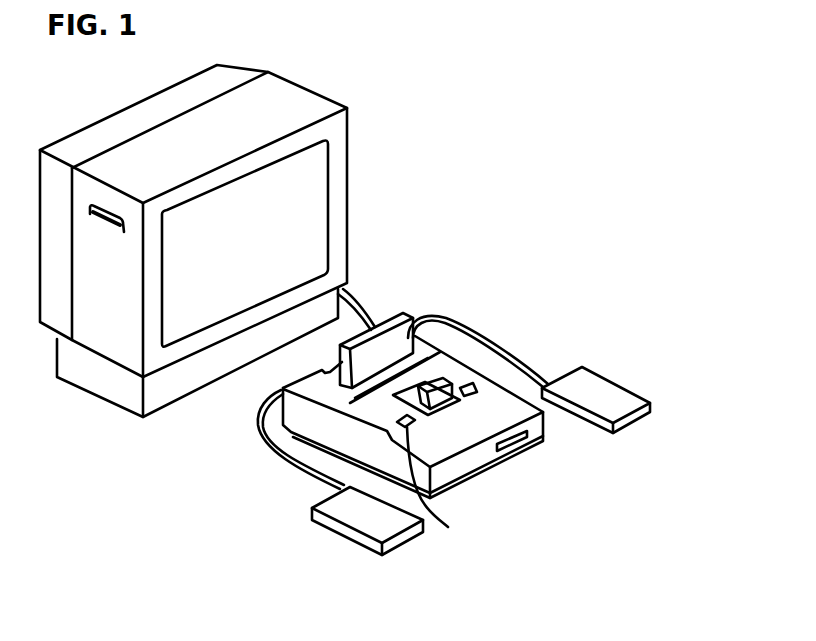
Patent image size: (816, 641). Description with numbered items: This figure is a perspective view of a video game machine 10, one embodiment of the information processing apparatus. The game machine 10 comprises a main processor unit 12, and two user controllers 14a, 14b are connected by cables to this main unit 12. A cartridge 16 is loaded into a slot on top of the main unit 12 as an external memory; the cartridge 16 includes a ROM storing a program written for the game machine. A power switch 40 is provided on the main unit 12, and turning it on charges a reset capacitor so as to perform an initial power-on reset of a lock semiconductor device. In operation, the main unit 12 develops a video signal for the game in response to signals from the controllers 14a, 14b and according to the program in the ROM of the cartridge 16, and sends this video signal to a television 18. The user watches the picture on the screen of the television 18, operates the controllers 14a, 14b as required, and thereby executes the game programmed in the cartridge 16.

The game machine 10 is at (470, 223).
The main processor unit 12 is at (465, 471).
The user controller 14a is at (400, 542).
The user controller 14b is at (627, 436).
The cartridge 16 is at (399, 312).
The television 18 is at (347, 177).
The power switch 40 is at (442, 488).